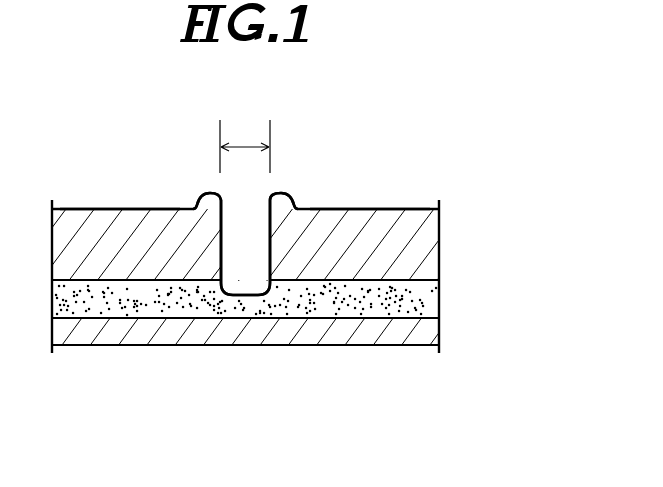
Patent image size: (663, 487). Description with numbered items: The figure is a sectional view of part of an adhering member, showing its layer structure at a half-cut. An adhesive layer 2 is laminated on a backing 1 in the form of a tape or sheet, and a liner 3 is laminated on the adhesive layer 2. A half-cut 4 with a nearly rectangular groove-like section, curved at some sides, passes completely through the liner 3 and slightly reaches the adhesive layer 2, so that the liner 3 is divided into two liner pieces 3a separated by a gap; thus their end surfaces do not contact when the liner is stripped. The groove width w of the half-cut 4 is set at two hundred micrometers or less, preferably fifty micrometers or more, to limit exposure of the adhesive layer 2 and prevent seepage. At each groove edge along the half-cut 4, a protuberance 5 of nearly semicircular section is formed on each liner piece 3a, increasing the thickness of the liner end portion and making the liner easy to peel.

The backing 1 is at (430, 334).
The adhesive layer 2 is at (430, 302).
The liner 3 is at (430, 242).
The liner piece 3a is at (87, 223).
The half-cut 4 is at (222, 240).
The protuberance 5 is at (207, 197).
The groove width w is at (245, 132).